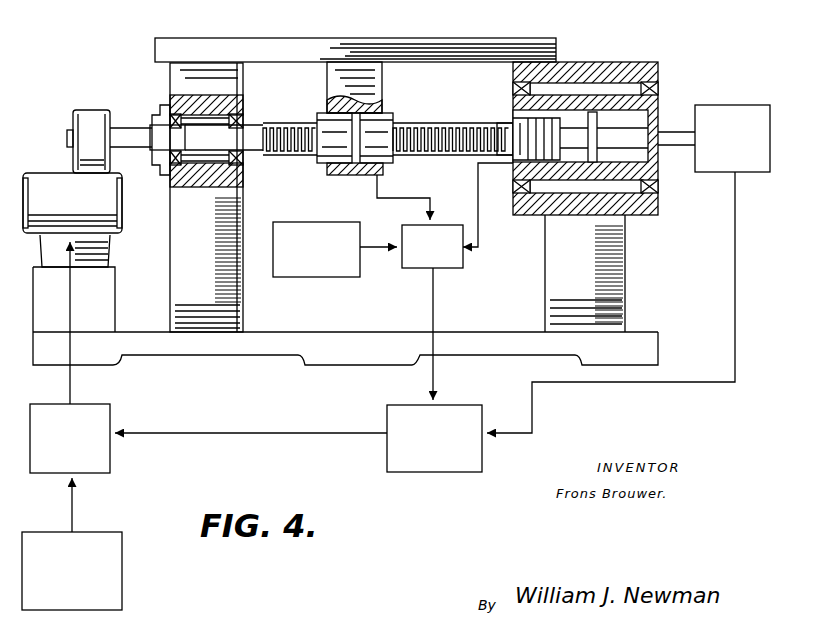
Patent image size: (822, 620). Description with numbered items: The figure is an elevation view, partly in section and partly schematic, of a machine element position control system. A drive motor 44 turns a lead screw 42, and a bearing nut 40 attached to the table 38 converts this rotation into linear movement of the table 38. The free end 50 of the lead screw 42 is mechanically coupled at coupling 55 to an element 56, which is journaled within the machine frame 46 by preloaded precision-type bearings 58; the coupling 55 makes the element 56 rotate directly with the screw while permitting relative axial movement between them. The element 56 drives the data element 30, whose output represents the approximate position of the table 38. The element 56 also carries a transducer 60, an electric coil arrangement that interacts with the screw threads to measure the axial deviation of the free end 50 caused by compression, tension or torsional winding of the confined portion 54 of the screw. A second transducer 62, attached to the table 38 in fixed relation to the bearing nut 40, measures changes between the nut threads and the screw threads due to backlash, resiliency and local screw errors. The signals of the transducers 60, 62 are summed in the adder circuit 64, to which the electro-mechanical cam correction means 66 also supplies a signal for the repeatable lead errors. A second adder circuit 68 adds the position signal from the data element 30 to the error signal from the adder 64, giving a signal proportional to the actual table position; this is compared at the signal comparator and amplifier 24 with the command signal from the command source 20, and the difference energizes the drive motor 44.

The command source 20 is at (96, 532).
The signal comparator and amplifier 24 is at (110, 410).
The data element 30 is at (770, 105).
The table 38 is at (430, 38).
The bearing nut 40 is at (318, 116).
The lead screw 42 is at (445, 156).
The drive motor 44 is at (54, 172).
The machine frame 46 is at (545, 278).
The free end of the lead screw 50 is at (497, 124).
The confined portion of the screw 54 is at (302, 156).
The coupling 55 is at (598, 144).
The element 56 is at (660, 95).
The preloaded precision-type bearings 58 is at (513, 88).
The transducer 60 is at (513, 172).
The second transducer 62 is at (394, 112).
The adder circuit 64 is at (426, 270).
The electro-mechanical cam correction means 66 is at (290, 277).
The second adder circuit 68 is at (482, 405).